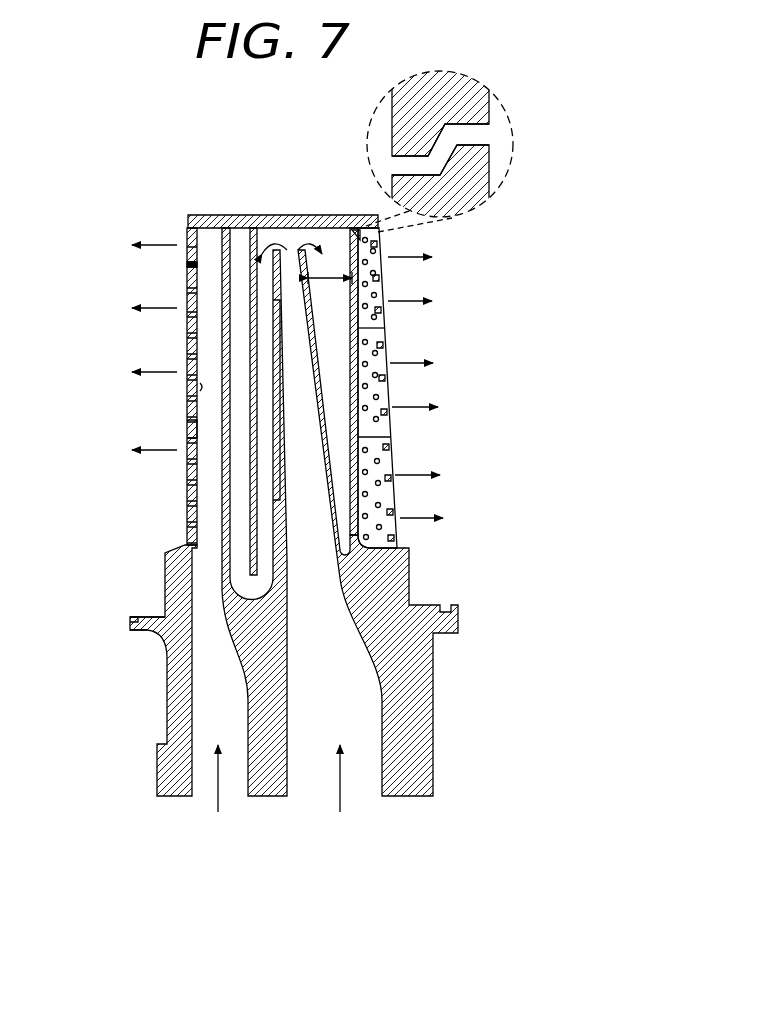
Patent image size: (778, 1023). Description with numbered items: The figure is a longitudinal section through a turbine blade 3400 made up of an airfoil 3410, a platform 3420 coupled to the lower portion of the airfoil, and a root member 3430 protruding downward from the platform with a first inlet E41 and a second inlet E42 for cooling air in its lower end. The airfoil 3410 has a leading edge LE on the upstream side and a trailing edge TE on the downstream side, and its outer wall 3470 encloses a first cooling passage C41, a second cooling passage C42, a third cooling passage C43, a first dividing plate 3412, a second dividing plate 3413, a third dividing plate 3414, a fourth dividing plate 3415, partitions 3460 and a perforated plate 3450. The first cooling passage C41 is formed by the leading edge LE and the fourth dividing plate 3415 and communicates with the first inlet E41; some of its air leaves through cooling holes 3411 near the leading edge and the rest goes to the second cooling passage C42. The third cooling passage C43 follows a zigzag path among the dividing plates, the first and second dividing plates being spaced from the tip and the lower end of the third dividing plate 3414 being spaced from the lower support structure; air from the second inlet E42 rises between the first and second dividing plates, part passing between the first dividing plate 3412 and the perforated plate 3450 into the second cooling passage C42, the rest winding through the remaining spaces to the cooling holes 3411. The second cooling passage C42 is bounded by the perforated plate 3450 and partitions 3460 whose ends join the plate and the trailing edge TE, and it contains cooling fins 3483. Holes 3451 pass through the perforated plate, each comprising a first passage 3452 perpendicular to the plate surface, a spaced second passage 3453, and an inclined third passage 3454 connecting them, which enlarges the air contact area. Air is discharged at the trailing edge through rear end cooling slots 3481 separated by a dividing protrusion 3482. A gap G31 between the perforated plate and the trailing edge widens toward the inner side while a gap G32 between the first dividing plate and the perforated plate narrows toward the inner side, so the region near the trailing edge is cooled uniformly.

The turbine blade 3400 is at (326, 160).
The airfoil 3410 is at (184, 276).
The outer wall 3470 is at (188, 340).
The first cooling passage C41 is at (195, 385).
The cooling holes 3411 is at (190, 430).
The fourth dividing plate 3415 is at (222, 467).
The second dividing plate 3413 is at (274, 498).
The third dividing plate 3414 is at (250, 520).
The platform 3420 is at (132, 625).
The root member 3430 is at (165, 703).
The first inlet E41 is at (237, 782).
The second inlet E42 is at (317, 782).
The perforated plate 3450 is at (352, 282).
The holes 3451 is at (525, 145).
The first passage 3452 is at (490, 187).
The second passage 3453 is at (490, 108).
The third passage 3454 is at (415, 170).
The partitions 3460 is at (365, 300).
The second cooling passage C42 is at (381, 355).
The dividing protrusion 3482 is at (381, 372).
The rear end cooling slots 3481 is at (380, 432).
The cooling fins 3483 is at (390, 450).
The gap G31 is at (392, 493).
The third cooling passage C43 is at (381, 498).
The first dividing plate 3412 is at (345, 530).
The gap G32 is at (330, 288).
The leading edge LE is at (187, 232).
The trailing edge TE is at (378, 233).